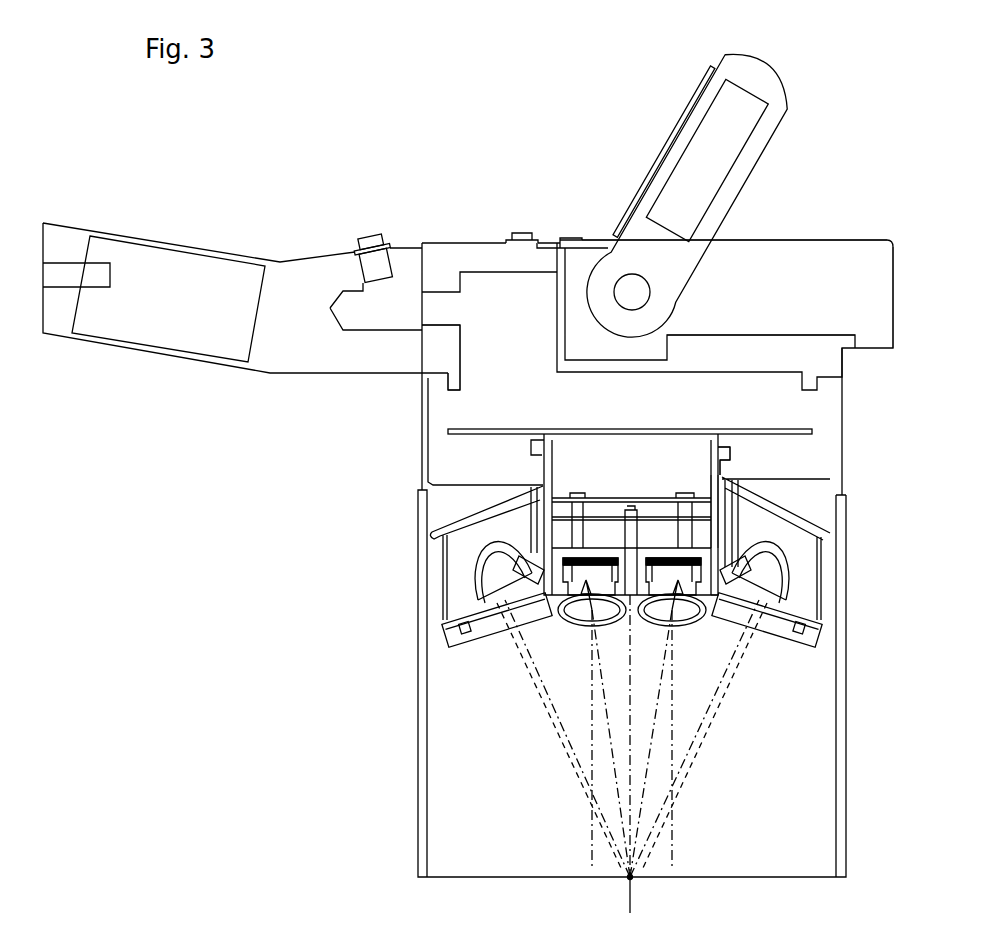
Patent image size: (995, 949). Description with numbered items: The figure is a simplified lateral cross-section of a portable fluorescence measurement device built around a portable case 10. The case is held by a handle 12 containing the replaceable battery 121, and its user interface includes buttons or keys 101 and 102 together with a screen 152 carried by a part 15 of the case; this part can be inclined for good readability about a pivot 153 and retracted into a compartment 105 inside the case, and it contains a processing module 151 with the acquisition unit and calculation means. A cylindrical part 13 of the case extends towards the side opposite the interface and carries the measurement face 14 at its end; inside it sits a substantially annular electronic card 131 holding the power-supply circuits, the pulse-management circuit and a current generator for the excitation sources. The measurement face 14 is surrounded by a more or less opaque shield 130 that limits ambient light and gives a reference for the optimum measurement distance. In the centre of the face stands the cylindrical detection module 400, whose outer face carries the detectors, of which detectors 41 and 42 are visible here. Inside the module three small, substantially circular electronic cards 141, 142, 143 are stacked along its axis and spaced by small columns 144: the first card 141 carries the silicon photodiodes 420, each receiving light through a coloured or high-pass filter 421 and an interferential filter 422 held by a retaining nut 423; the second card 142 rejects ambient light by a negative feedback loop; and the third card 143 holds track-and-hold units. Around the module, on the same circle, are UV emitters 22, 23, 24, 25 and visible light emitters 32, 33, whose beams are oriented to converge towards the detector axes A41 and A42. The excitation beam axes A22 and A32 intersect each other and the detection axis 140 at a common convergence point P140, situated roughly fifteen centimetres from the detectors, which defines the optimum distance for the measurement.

The portable case 10 is at (460, 238).
The compartment 105 is at (788, 262).
The part of the case 15 is at (773, 135).
The processing module 151 is at (718, 105).
The screen 152 is at (668, 145).
The lever pivot 153 is at (630, 290).
The button or key 102 is at (521, 233).
The button or key 101 is at (366, 240).
The handle 12 is at (245, 346).
The battery 121 is at (205, 356).
The cylindrical part 13 is at (422, 420).
The electronic card 131 is at (455, 434).
The shield 130 is at (418, 698).
The measurement face 14 is at (712, 602).
The first small electronic card 141 is at (598, 548).
The second small electronic card 142 is at (612, 520).
The third small electronic card 143 is at (657, 500).
The small columns 144 is at (682, 495).
The detection module 400 is at (737, 465).
The silicon photodiode 420 is at (705, 548).
The coloured or high-pass filter 421 is at (700, 557).
The interferential filter 422 is at (696, 566).
The retaining nut 423 is at (692, 573).
The UV emitter 22 is at (472, 568).
The UV emitter 25 is at (793, 572).
The visible light emitter 32 is at (440, 625).
The visible light emitter 33 is at (823, 635).
The UV emitter 23 is at (578, 622).
The UV emitter 24 is at (686, 622).
The detector 41 is at (575, 625).
The detector 42 is at (689, 625).
The axis of the excitation beam A22 is at (598, 748).
The axis of the excitation beam A32 is at (577, 745).
The detector axis A41 is at (590, 855).
The detector axis A42 is at (672, 808).
The detection axis 140 is at (634, 879).
The convergence point P140 is at (627, 880).